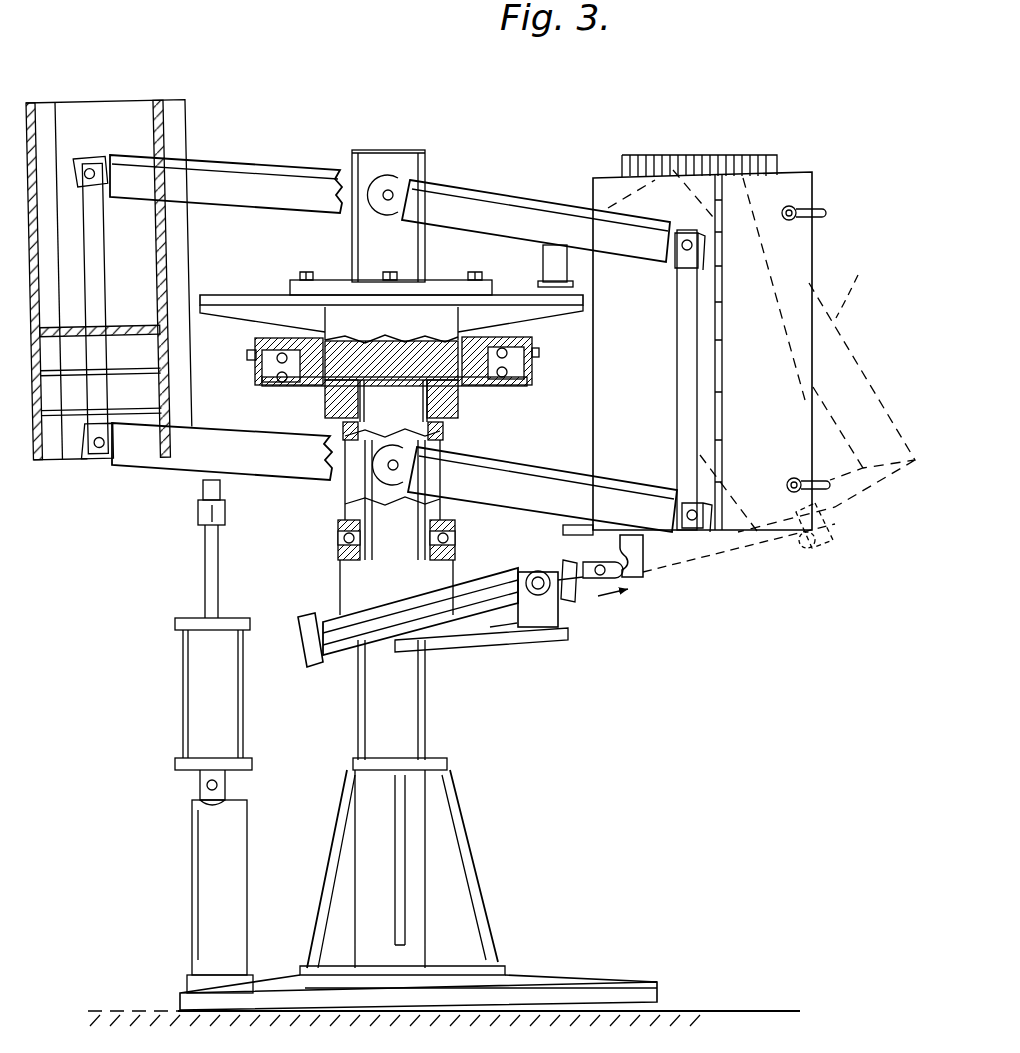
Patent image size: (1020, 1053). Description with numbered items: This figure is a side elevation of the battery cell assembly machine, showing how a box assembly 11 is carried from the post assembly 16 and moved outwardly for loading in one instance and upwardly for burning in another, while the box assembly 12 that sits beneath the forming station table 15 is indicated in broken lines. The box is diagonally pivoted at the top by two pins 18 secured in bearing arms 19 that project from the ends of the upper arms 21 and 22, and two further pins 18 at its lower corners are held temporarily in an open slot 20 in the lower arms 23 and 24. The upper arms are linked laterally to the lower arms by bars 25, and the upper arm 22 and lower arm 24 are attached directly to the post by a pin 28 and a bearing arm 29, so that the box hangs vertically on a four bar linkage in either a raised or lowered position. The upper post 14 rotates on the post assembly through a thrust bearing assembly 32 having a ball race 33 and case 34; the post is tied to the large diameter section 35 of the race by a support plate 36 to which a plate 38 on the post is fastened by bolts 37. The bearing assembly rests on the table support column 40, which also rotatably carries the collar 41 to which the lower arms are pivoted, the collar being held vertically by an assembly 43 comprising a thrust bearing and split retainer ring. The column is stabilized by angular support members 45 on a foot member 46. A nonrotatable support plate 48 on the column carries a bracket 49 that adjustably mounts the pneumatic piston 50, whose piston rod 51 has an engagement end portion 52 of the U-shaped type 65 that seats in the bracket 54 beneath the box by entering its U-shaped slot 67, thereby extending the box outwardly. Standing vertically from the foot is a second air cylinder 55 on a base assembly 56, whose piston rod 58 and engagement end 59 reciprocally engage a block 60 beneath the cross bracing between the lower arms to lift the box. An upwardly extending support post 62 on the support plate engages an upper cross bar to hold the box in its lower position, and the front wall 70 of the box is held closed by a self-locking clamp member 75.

The box assembly 11 is at (816, 176).
The box assembly 12 is at (190, 124).
The upper post 14 is at (425, 164).
The forming station table 15 is at (822, 216).
The post assembly 16 is at (386, 148).
The pins 18 is at (684, 250).
The bearing arms 19 is at (668, 228).
The open slot 20 is at (682, 503).
The upper arm 21 is at (512, 206).
The upper arm 22 is at (270, 176).
The lower arm 23 is at (537, 465).
The lower arm 24 is at (165, 470).
The bars 25 is at (100, 272).
The pin 28 is at (395, 180).
The bearing arm 29 is at (400, 214).
The thrust bearing assembly 32 is at (540, 354).
The ball race 33 is at (270, 362).
The case 34 is at (302, 392).
The large diameter section 35 is at (400, 333).
The support plate 36 is at (264, 300).
The bolts 37 is at (305, 276).
The plate 38 is at (334, 282).
The table support column 40 is at (428, 742).
The collar 41 is at (440, 445).
The assembly 43 is at (334, 548).
The angular support members 45 is at (332, 892).
The foot member 46 is at (575, 992).
The support plate 48 is at (560, 636).
The bracket 49 is at (560, 618).
The pneumatic piston 50 is at (472, 596).
The piston rod 51 is at (558, 570).
The engagement end portion 52 is at (594, 564).
The bracket 54 is at (638, 554).
The second air cylinder 55 is at (232, 676).
The base assembly 56 is at (232, 848).
The piston rod 58 is at (214, 563).
The engagement end 59 is at (215, 512).
The block 60 is at (222, 481).
The support post 62 is at (552, 264).
The U-shaped type 65 is at (806, 548).
The U-shaped slot 67 is at (634, 580).
The front wall 70 is at (48, 118).
The self-locking clamp member 75 is at (826, 483).